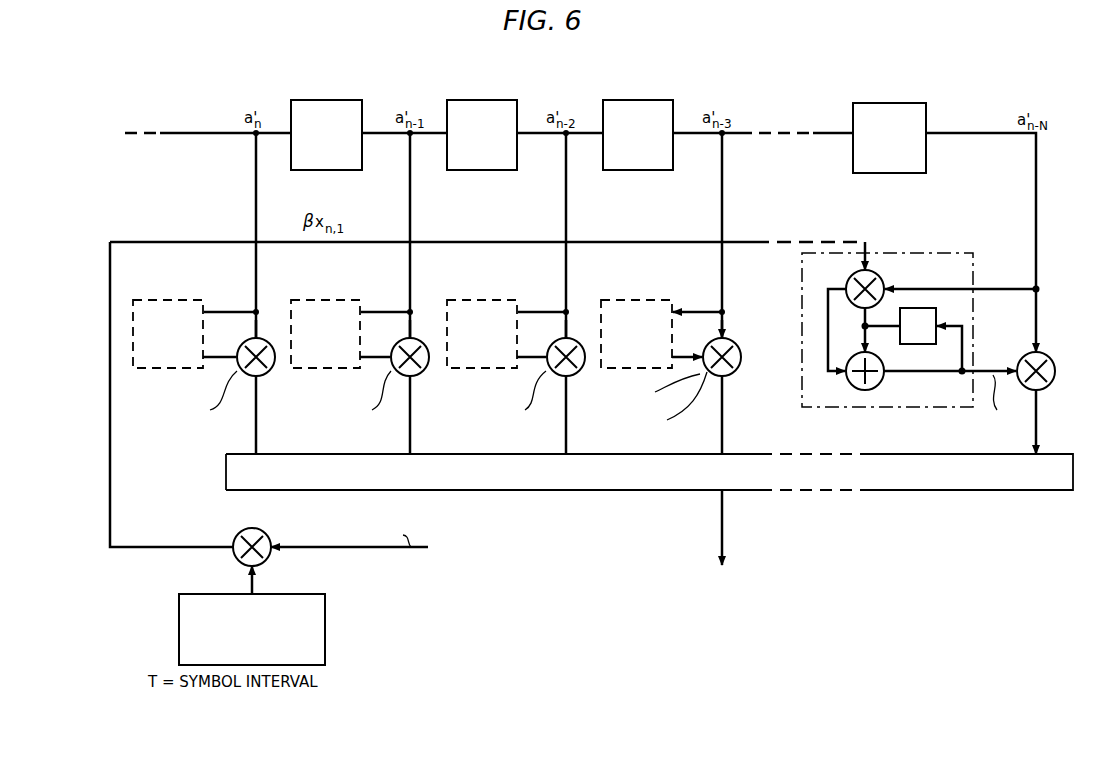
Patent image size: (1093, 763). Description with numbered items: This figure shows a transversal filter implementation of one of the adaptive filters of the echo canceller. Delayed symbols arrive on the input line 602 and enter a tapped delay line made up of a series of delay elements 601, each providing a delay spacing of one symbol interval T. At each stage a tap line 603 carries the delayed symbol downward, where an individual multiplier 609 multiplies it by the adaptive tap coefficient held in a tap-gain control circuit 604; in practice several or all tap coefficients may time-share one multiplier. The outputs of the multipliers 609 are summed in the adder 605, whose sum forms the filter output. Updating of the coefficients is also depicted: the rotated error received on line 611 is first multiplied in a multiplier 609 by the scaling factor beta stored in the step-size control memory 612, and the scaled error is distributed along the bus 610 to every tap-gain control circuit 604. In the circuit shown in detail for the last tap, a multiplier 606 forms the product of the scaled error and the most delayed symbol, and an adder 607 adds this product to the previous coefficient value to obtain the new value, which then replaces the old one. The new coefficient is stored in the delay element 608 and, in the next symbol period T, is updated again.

The delay element 601 is at (330, 100).
The input line 602 is at (190, 132).
The tap line 603 is at (252, 138).
The tap-gain control circuit 604 is at (172, 300).
The adder 605 is at (226, 470).
The multiplier 606 is at (851, 280).
The adder 607 is at (882, 384).
The delay element 608 is at (906, 344).
The multiplier 609 is at (263, 372).
The error signal bus 610 is at (458, 242).
The line 611 is at (387, 548).
The step-size control memory 612 is at (326, 630).